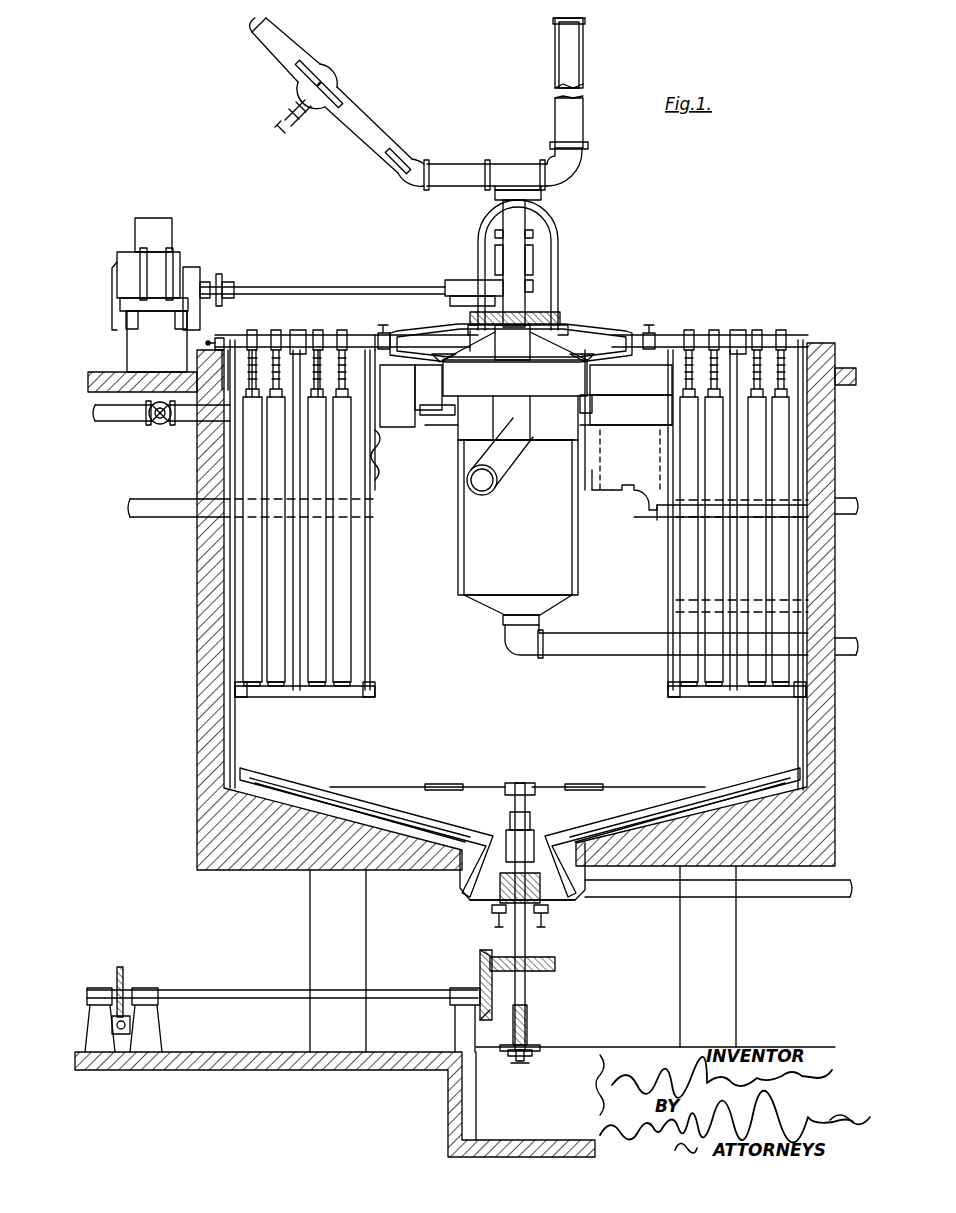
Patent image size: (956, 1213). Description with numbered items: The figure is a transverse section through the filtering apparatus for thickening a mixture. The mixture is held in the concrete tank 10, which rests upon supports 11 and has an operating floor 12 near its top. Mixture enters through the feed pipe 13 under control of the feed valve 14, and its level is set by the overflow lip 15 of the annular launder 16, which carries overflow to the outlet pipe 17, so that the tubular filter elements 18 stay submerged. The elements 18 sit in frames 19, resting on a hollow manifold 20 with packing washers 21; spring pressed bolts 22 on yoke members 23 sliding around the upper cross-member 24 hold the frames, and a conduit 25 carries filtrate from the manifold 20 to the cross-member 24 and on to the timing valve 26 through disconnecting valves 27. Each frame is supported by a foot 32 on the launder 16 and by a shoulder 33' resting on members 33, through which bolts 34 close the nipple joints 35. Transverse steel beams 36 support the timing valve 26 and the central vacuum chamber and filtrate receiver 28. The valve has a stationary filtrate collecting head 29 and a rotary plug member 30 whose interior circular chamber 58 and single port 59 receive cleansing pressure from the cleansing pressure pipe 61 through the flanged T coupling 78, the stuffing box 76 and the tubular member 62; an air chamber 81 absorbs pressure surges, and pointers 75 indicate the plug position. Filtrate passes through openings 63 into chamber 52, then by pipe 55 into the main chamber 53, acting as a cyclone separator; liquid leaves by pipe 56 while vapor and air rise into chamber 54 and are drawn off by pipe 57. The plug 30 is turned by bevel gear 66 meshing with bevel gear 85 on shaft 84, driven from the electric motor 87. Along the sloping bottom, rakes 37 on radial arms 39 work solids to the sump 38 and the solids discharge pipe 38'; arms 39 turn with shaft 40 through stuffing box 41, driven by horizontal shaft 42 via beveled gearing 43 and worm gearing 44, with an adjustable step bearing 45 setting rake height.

The tank 10 is at (210, 660).
The supports 11 is at (322, 913).
The operating floor 12 is at (107, 374).
The feed pipe 13 is at (101, 412).
The feed valve 14 is at (163, 424).
The overflow lip 15 is at (620, 375).
The annular launder 16 is at (616, 402).
The outlet pipe 17 is at (652, 522).
The filter elements 18 is at (345, 583).
The frames 19 is at (372, 641).
The manifold 20 is at (302, 694).
The packing washers 21 is at (355, 684).
The spring pressed bolts 22 is at (322, 360).
The yoke members 23 is at (261, 360).
The upper cross-member 24 is at (346, 333).
The conduit 25 is at (300, 530).
The timing valve 26 is at (588, 318).
The disconnecting valves 27 is at (386, 332).
The vacuum chamber and filtrate receiver 28 is at (572, 540).
The filtrate collecting head 29 is at (640, 330).
The rotary plug member 30 is at (563, 338).
The foot 32 is at (414, 420).
The members 33 is at (230, 323).
The shoulder 33' is at (236, 301).
The bolts 34 is at (207, 343).
The nipple joints 35 is at (378, 332).
The transverse steel beams 36 is at (612, 488).
The rakes 37 is at (378, 808).
The sump 38 is at (501, 886).
The solids discharge pipe 38' is at (718, 902).
The radial arms 39 is at (405, 797).
The shaft 40 is at (526, 938).
The stuffing box 41 is at (497, 915).
The horizontal shaft 42 is at (243, 998).
The beveled gearing 43 is at (545, 972).
The worm gearing 44 is at (128, 975).
The adjustable step bearing 45 is at (524, 1057).
The chamber 52 is at (572, 389).
The main chamber 53 is at (518, 564).
The chamber 54 is at (445, 365).
The pipe 55 is at (508, 445).
The pipe 56 is at (612, 648).
The pipe 57 is at (138, 510).
The interior circular chamber 58 is at (515, 400).
The port 59 is at (518, 403).
The cleansing pressure pipe 61 is at (380, 135).
The tubular member 62 is at (520, 292).
The openings 63 is at (443, 390).
The bevel gear 66 is at (555, 318).
The pointers 75 is at (530, 272).
The stuffing box 76 is at (535, 215).
The flanged T coupling 78 is at (508, 163).
The air chamber 81 is at (572, 60).
The shaft 84 is at (314, 290).
The bevel gear 85 is at (487, 283).
The electric motor 87 is at (137, 268).